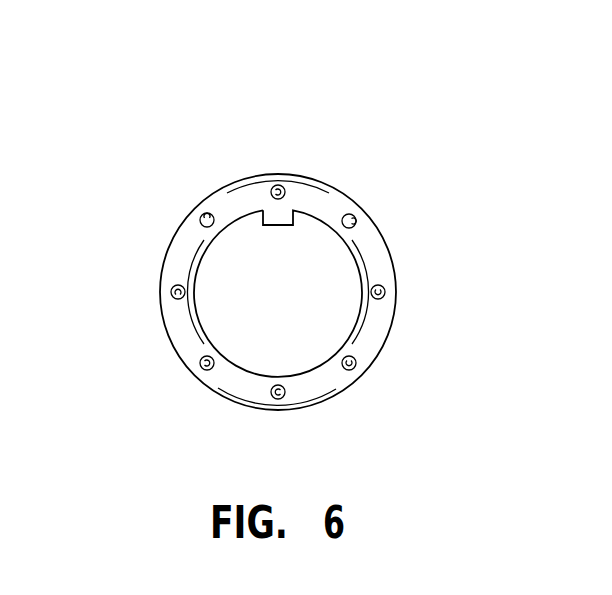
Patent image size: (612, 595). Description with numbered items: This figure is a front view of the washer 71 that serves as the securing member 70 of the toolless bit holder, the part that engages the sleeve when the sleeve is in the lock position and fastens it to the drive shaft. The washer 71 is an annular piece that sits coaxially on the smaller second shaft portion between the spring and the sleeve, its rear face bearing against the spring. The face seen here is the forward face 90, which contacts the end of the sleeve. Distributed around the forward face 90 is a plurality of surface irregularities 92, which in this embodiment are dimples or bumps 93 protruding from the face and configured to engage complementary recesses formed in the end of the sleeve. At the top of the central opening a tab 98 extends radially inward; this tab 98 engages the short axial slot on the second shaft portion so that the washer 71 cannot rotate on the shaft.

The securing member 70 is at (341, 151).
The washer 71 is at (163, 255).
The forward face 90 is at (373, 325).
The surface irregularities 92 is at (207, 212).
The dimples or bumps 93 is at (351, 219).
The tab 98 is at (280, 218).